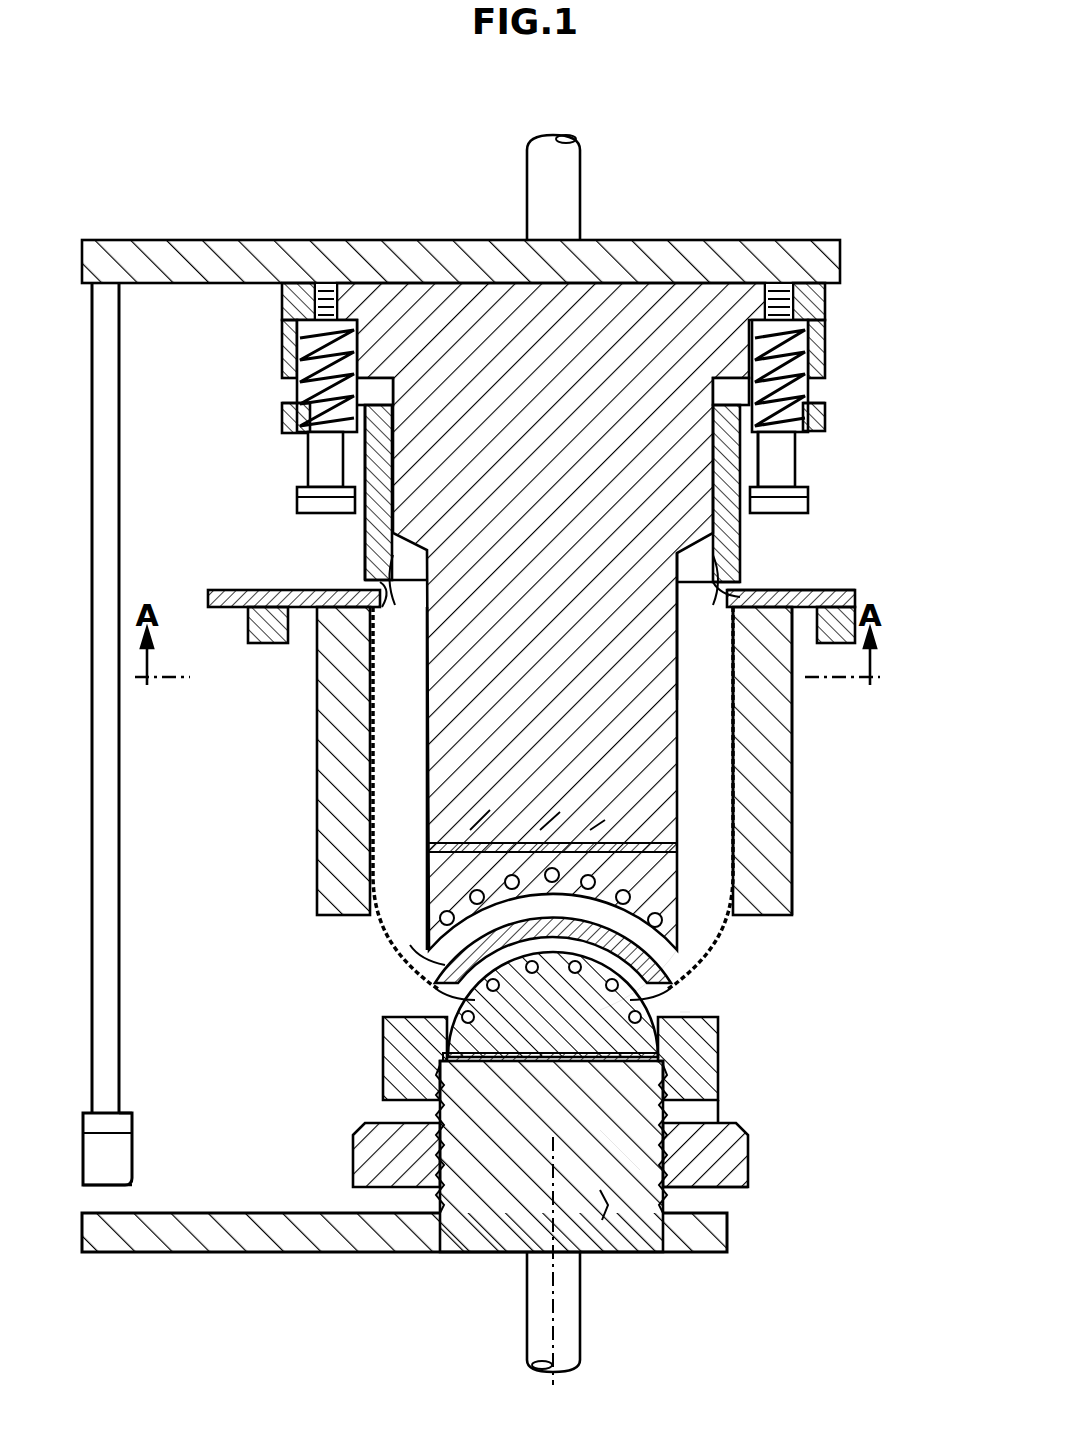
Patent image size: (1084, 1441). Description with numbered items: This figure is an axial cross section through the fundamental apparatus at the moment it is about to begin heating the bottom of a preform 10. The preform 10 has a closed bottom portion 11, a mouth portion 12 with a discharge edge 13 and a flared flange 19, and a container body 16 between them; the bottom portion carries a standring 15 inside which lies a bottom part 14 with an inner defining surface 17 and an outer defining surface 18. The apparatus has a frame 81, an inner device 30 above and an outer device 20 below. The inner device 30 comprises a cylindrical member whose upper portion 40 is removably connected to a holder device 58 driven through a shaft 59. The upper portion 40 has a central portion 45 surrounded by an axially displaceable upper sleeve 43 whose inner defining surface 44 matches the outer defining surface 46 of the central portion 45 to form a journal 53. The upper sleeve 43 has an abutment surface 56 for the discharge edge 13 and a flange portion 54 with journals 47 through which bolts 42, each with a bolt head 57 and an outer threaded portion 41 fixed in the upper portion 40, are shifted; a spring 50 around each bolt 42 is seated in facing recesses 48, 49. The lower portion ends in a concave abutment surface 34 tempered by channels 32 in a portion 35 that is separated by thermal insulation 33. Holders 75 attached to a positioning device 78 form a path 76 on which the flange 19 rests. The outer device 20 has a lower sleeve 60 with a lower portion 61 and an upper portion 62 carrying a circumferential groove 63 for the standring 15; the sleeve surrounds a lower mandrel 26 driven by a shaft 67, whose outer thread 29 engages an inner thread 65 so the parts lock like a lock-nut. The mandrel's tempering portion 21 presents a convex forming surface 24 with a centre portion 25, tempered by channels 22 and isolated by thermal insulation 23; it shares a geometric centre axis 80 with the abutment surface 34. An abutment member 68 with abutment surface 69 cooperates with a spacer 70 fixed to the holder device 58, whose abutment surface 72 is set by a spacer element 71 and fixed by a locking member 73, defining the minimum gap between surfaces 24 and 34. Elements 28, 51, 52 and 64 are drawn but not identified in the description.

The preform 10 is at (725, 755).
The closed bottom portion 11 is at (667, 945).
The mouth portion 12 is at (715, 608).
The discharge edge 13 is at (742, 576).
The bottom part 14 is at (583, 850).
The standring 15 is at (672, 996).
The container body 16 is at (780, 772).
The inner defining surface 17 is at (600, 878).
The outer defining surface 18 is at (600, 960).
The flared flange 19 is at (760, 588).
The outer device 20 is at (395, 1115).
The tempering portion 21 is at (562, 1065).
The channels for thermal medium 22 is at (530, 975).
The thermal insulation 23 is at (500, 1062).
The convex forming surface 24 is at (440, 997).
The centre portion 25 is at (556, 975).
The lower mandrel 26 is at (603, 1222).
The lock nut 28 is at (353, 1162).
The outer thread 29 is at (745, 1150).
The inner device 30 is at (450, 825).
The channels for thermal medium 32 is at (540, 843).
The thermal insulation 33 is at (485, 843).
The concave abutment surface 34 is at (400, 960).
The portion provided with channels 35 is at (650, 862).
The upper portion 40 is at (712, 300).
The outer threaded portion 41 is at (805, 305).
The bolt 42 is at (790, 478).
The upper sleeve 43 is at (790, 515).
The inner defining surface 44 is at (740, 545).
The central portion 45 is at (395, 605).
The outer defining surface 46 is at (715, 395).
The journals 47 is at (800, 462).
The recess 48 is at (805, 340).
The recess 49 is at (822, 408).
The spring 50 is at (805, 372).
The housing wall 51 is at (745, 375).
The body portion 52 is at (705, 445).
The journal 53 is at (392, 490).
The flange portion 54 is at (825, 420).
The abutment surface 56 is at (370, 585).
The bolt head 57 is at (305, 508).
The holder device 58 is at (258, 248).
The shaft 59 is at (540, 176).
The lower sleeve 60 is at (720, 1110).
The lower portion 61 is at (748, 1165).
The upper portion 62 is at (720, 1060).
The circumferential groove 63 is at (695, 1020).
The base block 64 is at (385, 1040).
The inner thread 65 is at (578, 1065).
The shaft 67 is at (582, 1322).
The abutment member 68 is at (250, 1252).
The abutment surface 69 is at (110, 1210).
The spacer 70 is at (122, 783).
The spacer element 71 is at (120, 1165).
The abutment surface 72 is at (125, 1185).
The locking member 73 is at (135, 1110).
The holders 75 is at (380, 660).
The path 76 is at (212, 607).
The positioning device 78 is at (770, 733).
The geometric centre axis 80 is at (530, 1322).
The frame 81 is at (262, 643).